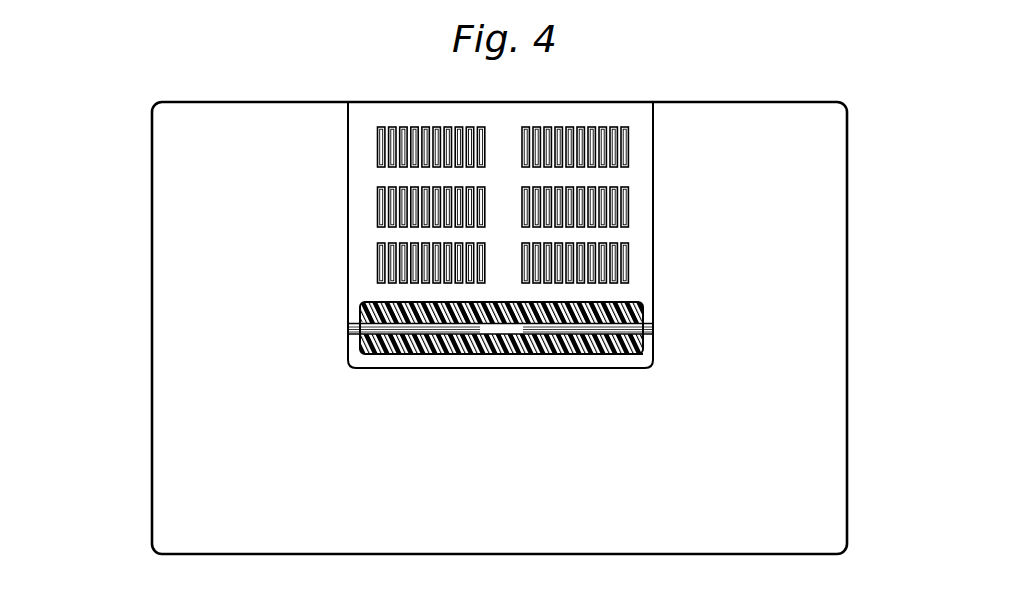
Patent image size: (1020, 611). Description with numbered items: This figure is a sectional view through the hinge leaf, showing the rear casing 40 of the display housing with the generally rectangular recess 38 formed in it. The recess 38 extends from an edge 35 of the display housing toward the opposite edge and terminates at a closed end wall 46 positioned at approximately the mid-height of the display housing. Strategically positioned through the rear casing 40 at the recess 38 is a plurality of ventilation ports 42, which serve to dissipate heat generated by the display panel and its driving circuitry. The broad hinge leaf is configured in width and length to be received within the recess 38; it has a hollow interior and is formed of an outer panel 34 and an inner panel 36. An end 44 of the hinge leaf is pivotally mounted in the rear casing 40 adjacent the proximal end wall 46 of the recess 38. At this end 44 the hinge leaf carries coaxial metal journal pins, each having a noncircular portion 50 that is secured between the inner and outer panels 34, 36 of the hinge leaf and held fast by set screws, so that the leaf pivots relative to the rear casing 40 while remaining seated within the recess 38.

The outer panel 34 is at (636, 303).
The edge of the display housing 35 is at (190, 205).
The inner panel 36 is at (642, 353).
The recess 38 is at (367, 158).
The rear casing 40 is at (802, 365).
The ventilation ports 42 is at (628, 263).
The end of the hinge leaf 44 is at (371, 347).
The closed end wall 46 is at (447, 372).
The noncircular portion 50 is at (348, 325).